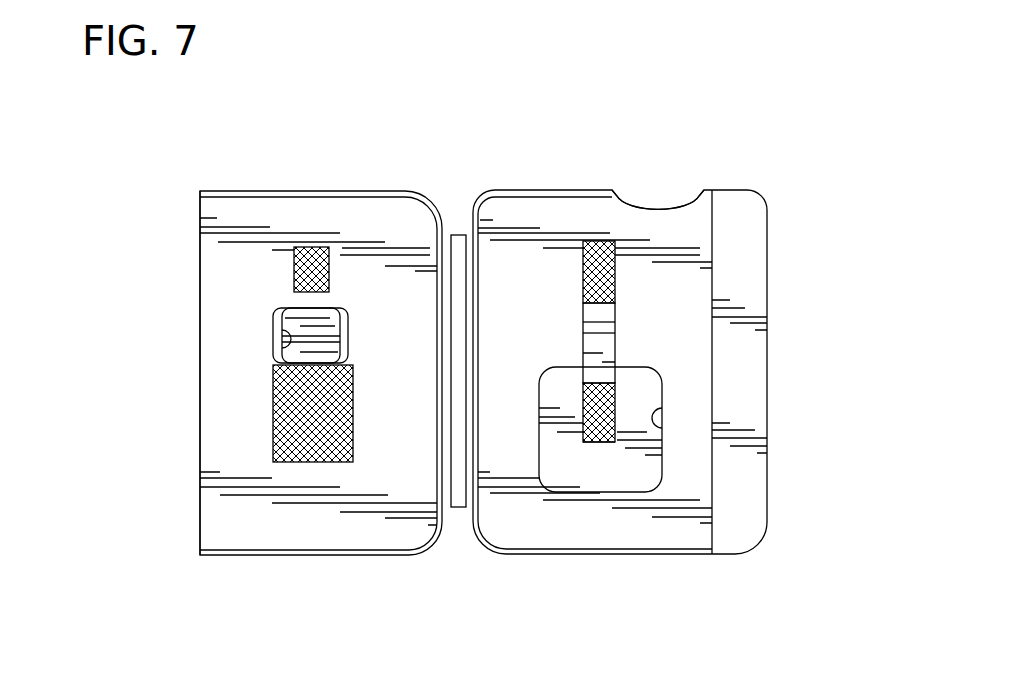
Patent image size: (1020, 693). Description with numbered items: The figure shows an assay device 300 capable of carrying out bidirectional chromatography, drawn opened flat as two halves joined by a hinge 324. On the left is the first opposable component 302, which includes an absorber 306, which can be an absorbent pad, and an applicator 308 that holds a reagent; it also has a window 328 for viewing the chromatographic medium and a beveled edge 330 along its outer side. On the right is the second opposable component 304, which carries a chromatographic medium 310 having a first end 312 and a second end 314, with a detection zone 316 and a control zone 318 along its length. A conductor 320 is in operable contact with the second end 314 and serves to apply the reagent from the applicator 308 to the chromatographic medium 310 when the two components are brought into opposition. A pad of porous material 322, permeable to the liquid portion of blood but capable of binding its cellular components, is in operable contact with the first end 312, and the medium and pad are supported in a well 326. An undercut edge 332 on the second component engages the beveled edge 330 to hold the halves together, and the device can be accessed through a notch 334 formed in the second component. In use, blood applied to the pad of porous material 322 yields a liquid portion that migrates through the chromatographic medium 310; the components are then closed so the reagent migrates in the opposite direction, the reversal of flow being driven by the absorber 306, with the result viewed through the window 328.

The assay device 300 is at (442, 573).
The first opposable component 302 is at (240, 207).
The second opposable component 304 is at (527, 210).
The absorber 306 is at (305, 440).
The applicator 308 is at (315, 262).
The chromatographic medium 310 is at (608, 341).
The first end 312 is at (615, 383).
The second end 314 is at (615, 303).
The detection zone 316 is at (615, 322).
The control zone 318 is at (585, 333).
The conductor 320 is at (616, 270).
The pad of porous material 322 is at (593, 442).
The hinge 324 is at (460, 238).
The well 326 is at (660, 430).
The window 328 is at (283, 353).
The beveled edge 330 is at (198, 282).
The undercut edge 332 is at (713, 533).
The notch 334 is at (667, 212).